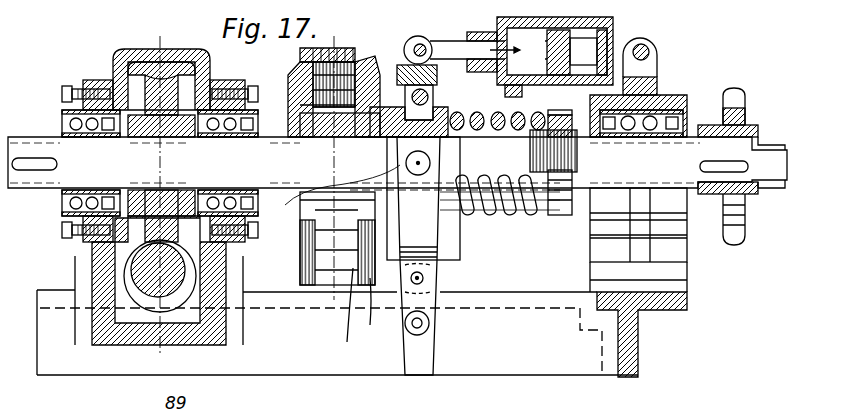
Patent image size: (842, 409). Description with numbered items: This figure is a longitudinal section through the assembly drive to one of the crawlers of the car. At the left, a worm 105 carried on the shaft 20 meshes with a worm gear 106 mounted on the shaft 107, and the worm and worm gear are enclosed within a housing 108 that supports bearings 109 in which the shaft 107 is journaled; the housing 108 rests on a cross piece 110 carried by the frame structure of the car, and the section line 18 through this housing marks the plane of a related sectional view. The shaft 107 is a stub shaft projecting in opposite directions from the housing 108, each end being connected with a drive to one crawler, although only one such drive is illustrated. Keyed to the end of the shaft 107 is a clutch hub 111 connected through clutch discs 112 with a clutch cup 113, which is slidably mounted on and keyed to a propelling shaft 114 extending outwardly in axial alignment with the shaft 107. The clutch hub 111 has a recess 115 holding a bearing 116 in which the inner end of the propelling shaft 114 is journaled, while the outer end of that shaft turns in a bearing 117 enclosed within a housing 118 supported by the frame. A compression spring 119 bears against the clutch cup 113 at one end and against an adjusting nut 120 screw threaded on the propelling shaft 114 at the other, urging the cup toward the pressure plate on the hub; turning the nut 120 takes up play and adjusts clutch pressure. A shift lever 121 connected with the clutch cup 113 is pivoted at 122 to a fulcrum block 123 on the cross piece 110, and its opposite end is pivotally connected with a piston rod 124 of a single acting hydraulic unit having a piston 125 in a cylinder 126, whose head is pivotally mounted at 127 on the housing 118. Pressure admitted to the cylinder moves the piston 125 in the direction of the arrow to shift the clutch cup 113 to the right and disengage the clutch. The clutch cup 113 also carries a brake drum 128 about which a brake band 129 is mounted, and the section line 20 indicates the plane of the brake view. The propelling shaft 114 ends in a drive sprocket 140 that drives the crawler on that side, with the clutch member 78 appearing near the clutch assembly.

The section line 18- 18 is at (176, 33).
The shaft 20 is at (352, 33).
The clutch member 78 is at (300, 68).
The worm 105 is at (140, 276).
The worm gear 106 is at (146, 86).
The shaft 107 is at (72, 140).
The housing 108 is at (128, 50).
The bearings 109 is at (72, 110).
The cross piece 110 is at (515, 286).
The clutch hub 111 is at (300, 100).
The clutch discs 112 is at (348, 48).
The clutch cup 113 is at (376, 60).
The propelling shaft 114 is at (492, 101).
The recess 115 is at (300, 86).
The bearing 116 is at (300, 212).
The bearing 117 is at (660, 92).
The housing 118 is at (687, 98).
The compression spring 119 is at (507, 215).
The adjusting nut 120 is at (553, 216).
The shift lever 121 is at (437, 242).
The pivot 122 is at (430, 327).
The fulcrum block 123 is at (432, 357).
The piston rod 124 is at (455, 27).
The piston 125 is at (572, 27).
The cylinder 126 is at (543, 28).
The pivotal mounting 127 is at (644, 45).
The brake drum 128 is at (374, 312).
The brake band 129 is at (361, 318).
The drive sprocket 140 is at (745, 230).